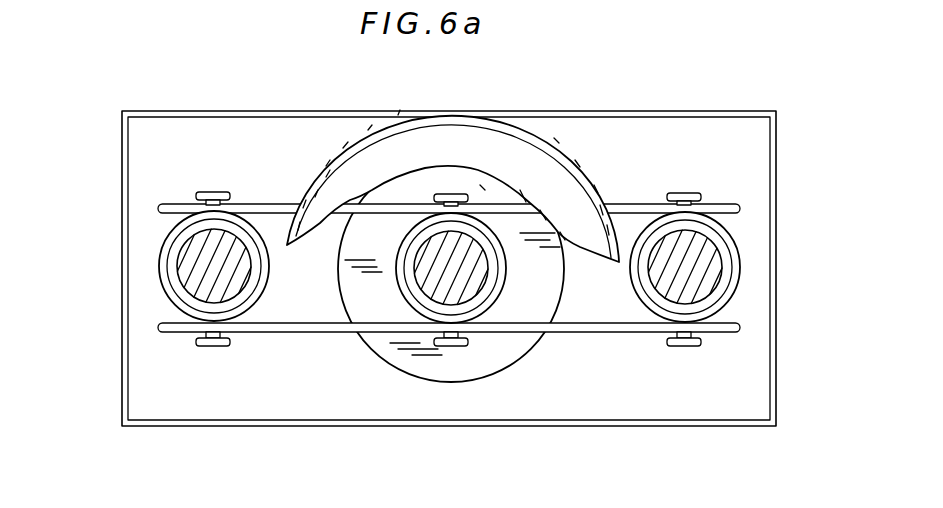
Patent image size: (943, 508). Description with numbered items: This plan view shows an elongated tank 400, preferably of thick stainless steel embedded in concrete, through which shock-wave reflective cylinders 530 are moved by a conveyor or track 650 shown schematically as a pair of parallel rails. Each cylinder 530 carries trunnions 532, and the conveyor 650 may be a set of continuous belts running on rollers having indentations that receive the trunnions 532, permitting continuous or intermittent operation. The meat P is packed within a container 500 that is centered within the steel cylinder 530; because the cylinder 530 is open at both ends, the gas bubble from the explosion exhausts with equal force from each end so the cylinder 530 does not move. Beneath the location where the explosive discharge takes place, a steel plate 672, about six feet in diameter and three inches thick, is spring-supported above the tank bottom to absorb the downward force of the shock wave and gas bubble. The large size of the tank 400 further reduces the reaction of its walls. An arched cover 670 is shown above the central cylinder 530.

The elongated tank 400 is at (775, 410).
The container 500 is at (450, 270).
The cylinder 530 is at (164, 288).
The trunnions 532 is at (222, 347).
The conveyor or track 650 is at (267, 204).
The cover 670 is at (396, 110).
The steel plate 672 is at (470, 370).
The meat P is at (200, 267).